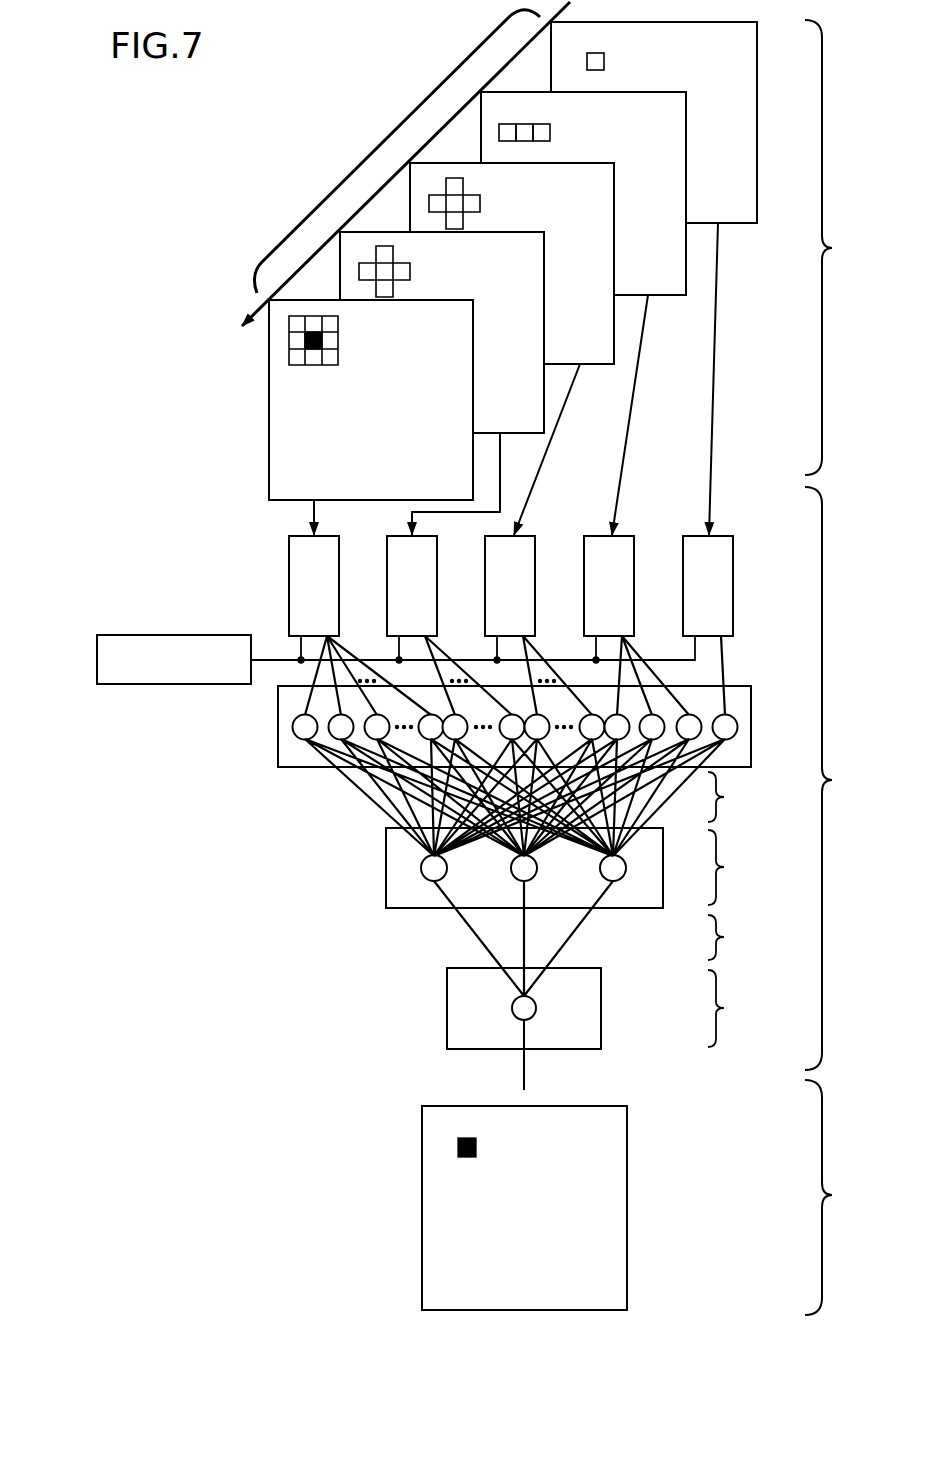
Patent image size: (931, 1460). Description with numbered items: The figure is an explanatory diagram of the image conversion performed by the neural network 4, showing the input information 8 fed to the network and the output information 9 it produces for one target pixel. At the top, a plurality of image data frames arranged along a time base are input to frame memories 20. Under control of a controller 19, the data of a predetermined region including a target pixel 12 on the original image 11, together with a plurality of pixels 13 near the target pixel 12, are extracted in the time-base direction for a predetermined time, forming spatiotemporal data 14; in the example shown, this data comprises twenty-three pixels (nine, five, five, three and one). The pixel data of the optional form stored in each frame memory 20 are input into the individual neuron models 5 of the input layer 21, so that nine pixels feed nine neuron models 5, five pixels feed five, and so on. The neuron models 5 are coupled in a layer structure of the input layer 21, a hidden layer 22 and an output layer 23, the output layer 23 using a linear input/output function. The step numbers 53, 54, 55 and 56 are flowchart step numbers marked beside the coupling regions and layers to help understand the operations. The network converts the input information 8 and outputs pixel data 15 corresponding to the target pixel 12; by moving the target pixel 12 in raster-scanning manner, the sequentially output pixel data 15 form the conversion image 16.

The neural network 4 is at (828, 778).
The neuron model 5 is at (298, 740).
The input information 8 is at (828, 247).
The output information 9 is at (828, 1197).
The original image 11 is at (269, 432).
The target pixel 12 is at (305, 349).
The pixels near the target pixel 13 is at (312, 357).
The spatiotemporal data 14 is at (398, 124).
The pixel data 15 is at (478, 1146).
The conversion image 16 is at (422, 1240).
The controller 19 is at (147, 635).
The frame memory 20 is at (289, 556).
The input layer 21 is at (278, 733).
The hidden layer 22 is at (386, 868).
The output layer 23 is at (447, 1008).
The step number 53 is at (533, 797).
The step number 54 is at (735, 867).
The step number 55 is at (598, 938).
The step number 56 is at (735, 1008).